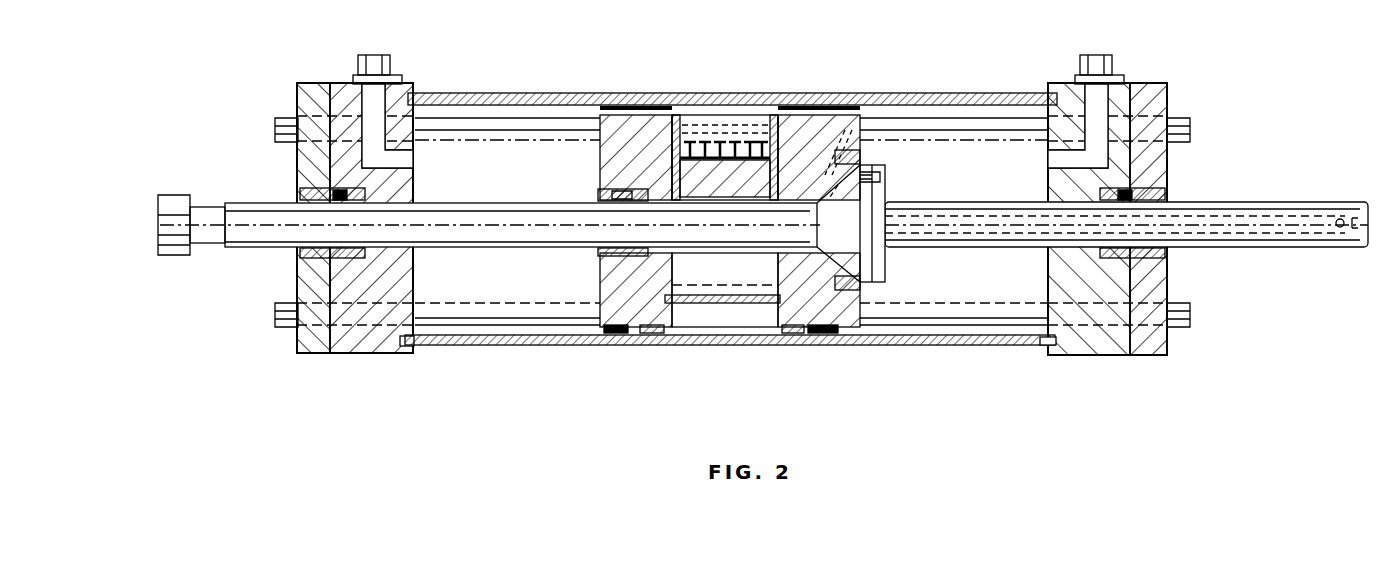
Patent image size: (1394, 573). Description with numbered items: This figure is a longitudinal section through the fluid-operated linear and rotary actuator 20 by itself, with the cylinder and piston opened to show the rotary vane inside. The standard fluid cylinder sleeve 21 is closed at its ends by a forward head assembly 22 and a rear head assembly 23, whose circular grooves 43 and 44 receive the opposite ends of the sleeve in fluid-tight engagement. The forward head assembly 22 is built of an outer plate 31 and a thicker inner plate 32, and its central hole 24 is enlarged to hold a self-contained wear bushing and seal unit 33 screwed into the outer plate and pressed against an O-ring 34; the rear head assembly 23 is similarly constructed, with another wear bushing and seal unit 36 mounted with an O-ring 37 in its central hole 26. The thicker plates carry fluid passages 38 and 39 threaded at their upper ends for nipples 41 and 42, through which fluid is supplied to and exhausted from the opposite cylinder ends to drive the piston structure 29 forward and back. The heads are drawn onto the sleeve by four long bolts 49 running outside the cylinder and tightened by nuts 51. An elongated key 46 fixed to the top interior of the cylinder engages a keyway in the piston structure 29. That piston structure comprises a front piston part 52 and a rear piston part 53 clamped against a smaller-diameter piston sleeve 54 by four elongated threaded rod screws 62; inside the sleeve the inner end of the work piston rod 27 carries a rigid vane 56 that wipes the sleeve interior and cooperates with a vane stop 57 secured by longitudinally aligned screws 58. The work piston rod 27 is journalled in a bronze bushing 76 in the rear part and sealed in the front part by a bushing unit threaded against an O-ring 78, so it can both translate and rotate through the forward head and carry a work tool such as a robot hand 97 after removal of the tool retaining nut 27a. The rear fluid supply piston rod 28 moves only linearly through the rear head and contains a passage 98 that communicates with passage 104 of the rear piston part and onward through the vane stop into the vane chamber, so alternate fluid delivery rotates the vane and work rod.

The actuator 20 is at (470, 86).
The fluid cylinder sleeve 21 is at (578, 345).
The forward head assembly 22 is at (360, 356).
The rear head assembly 23 is at (1094, 358).
The central hole 24 is at (418, 206).
The central hole 26 is at (1048, 206).
The work piston rod 27 is at (285, 230).
The tool retaining nut 27a is at (170, 255).
The fluid supply piston rod 28 is at (1255, 230).
The piston structure 29 is at (598, 283).
The outer plate 31 is at (318, 350).
The inner plate 32 is at (393, 345).
The wear bushing and seal unit 33 is at (300, 196).
The O-ring 34 is at (335, 194).
The wear bushing and seal unit 36 is at (1172, 196).
The O-ring 37 is at (1130, 194).
The fluid passage 38 is at (368, 112).
The fluid passage 39 is at (1098, 112).
The threaded nipple 41 is at (392, 62).
The threaded nipple 42 is at (1082, 66).
The circular groove 43 is at (420, 346).
The circular groove 44 is at (1045, 345).
The elongated key 46 is at (548, 98).
The long bolts 49 is at (500, 315).
The nuts 51 is at (285, 322).
The front piston part 52 is at (645, 332).
The rear piston part 53 is at (820, 320).
The piston sleeve 54 is at (720, 310).
The vane 56 is at (750, 280).
The vane stop 57 is at (675, 104).
The screws 58 is at (712, 150).
The threaded rod screws 62 is at (862, 156).
The bronze bushing 76 is at (800, 300).
The O-ring 78 is at (625, 192).
The robot hand 97 is at (598, 196).
The passage 98 is at (1258, 215).
The passage 104 is at (880, 240).